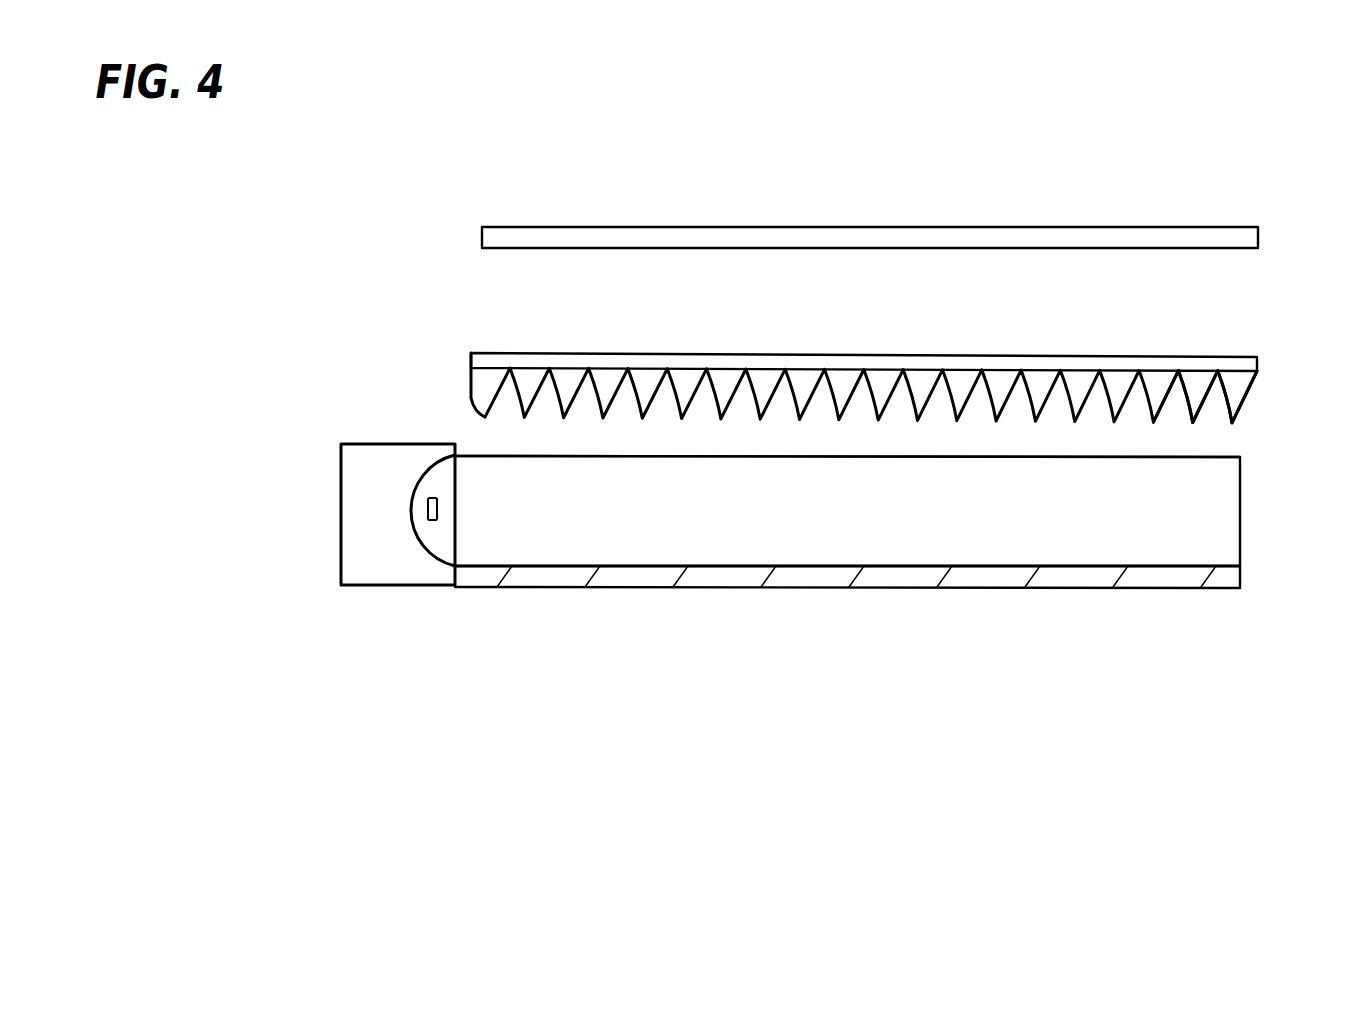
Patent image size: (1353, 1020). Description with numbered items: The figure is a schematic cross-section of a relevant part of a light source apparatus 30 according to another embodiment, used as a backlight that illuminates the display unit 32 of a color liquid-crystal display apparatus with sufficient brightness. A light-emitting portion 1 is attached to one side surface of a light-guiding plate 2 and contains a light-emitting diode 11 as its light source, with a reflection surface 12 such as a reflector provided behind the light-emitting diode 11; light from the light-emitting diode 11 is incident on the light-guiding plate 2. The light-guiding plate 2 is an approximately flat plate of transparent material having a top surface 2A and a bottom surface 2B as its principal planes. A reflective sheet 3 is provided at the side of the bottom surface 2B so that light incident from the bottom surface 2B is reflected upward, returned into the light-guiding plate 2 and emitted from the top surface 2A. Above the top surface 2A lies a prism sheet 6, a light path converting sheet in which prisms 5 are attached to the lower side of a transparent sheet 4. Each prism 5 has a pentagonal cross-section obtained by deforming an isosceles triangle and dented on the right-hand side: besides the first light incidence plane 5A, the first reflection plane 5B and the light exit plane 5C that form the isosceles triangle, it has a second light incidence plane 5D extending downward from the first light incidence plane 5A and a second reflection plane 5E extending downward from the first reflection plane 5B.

The light source apparatus 30 is at (926, 778).
The display unit 32 is at (840, 237).
The prism sheet 6 is at (903, 358).
The transparent sheet 4 is at (1247, 362).
The prism 5 is at (483, 380).
The first light incidence plane 5A is at (1177, 387).
The first reflection plane 5B is at (1218, 408).
The light exit plane 5C is at (1198, 381).
The second light incidence plane 5D is at (1184, 414).
The second reflection plane 5E is at (1215, 396).
The light-emitting portion 1 is at (362, 560).
The light-emitting diode 11 is at (431, 522).
The reflection surface 12 is at (421, 464).
The light-guiding plate 2 is at (973, 533).
The top surface 2A is at (1083, 458).
The bottom surface 2B is at (1112, 565).
The reflective sheet 3 is at (883, 575).